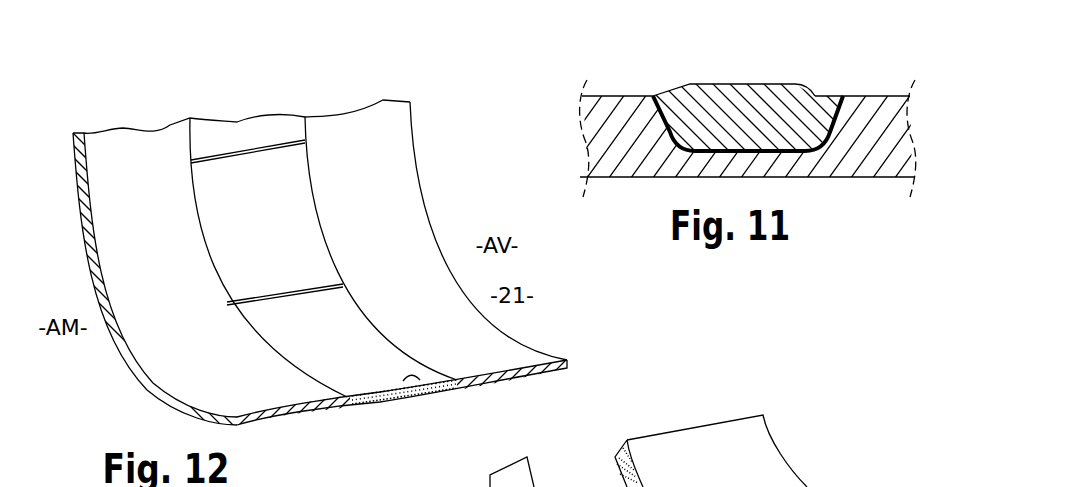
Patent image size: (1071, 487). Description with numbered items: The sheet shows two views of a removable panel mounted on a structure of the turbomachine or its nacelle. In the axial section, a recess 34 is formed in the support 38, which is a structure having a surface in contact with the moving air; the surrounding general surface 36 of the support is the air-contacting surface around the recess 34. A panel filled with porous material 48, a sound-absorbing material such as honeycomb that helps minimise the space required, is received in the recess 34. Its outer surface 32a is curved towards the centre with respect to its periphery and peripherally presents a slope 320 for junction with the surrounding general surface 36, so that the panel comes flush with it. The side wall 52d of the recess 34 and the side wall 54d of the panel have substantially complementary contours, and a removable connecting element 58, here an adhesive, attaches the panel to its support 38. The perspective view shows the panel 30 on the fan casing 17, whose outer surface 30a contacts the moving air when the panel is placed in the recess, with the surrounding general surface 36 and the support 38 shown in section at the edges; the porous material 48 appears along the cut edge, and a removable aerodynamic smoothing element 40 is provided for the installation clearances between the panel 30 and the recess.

In FIG. 12, the fan casing 17 is at (182, 189).
In FIG. 12, the panel 30 is at (238, 176).
In FIG. 12, the outer surface of panel 30a is at (273, 163).
In FIG. 11, the outer surface of panel 32a is at (752, 83).
In FIG. 11, the recess 34 is at (841, 126).
In FIG. 11, the surrounding general surface 36 is at (883, 96).
In FIG. 12, the surrounding general surface 36 is at (135, 290).
In FIG. 11, the support 38 is at (889, 150).
In FIG. 12, the support 38 is at (142, 394).
In FIG. 12, the removable aerodynamic smoothing element 40 is at (578, 486).
In FIG. 11, the porous material 48 is at (717, 108).
In FIG. 12, the porous material 48 is at (430, 392).
In FIG. 11, the side wall of recess 52d is at (680, 100).
In FIG. 11, the side wall of panel 54d is at (700, 107).
In FIG. 11, the removable connecting element 58 is at (672, 138).
In FIG. 11, the slope 320 is at (675, 92).